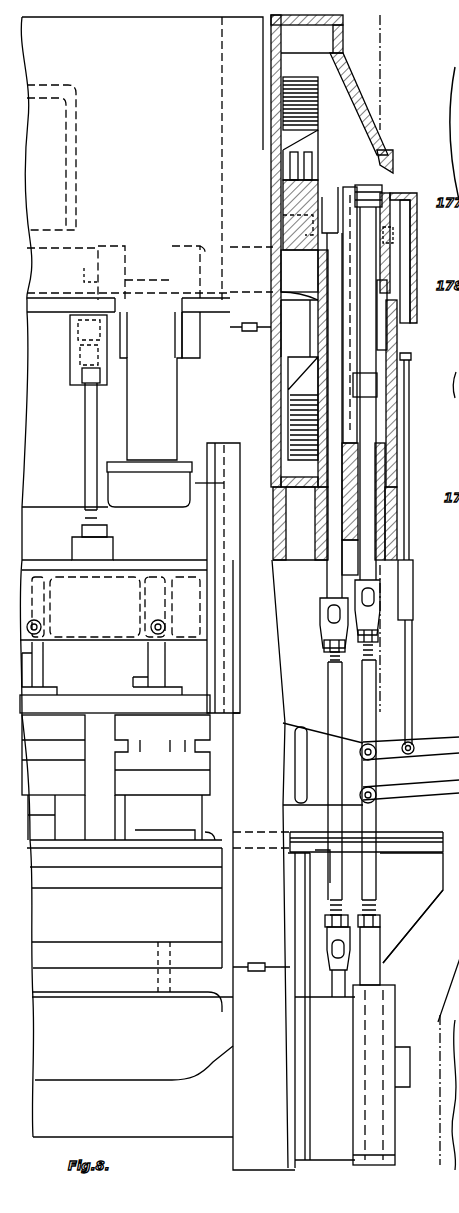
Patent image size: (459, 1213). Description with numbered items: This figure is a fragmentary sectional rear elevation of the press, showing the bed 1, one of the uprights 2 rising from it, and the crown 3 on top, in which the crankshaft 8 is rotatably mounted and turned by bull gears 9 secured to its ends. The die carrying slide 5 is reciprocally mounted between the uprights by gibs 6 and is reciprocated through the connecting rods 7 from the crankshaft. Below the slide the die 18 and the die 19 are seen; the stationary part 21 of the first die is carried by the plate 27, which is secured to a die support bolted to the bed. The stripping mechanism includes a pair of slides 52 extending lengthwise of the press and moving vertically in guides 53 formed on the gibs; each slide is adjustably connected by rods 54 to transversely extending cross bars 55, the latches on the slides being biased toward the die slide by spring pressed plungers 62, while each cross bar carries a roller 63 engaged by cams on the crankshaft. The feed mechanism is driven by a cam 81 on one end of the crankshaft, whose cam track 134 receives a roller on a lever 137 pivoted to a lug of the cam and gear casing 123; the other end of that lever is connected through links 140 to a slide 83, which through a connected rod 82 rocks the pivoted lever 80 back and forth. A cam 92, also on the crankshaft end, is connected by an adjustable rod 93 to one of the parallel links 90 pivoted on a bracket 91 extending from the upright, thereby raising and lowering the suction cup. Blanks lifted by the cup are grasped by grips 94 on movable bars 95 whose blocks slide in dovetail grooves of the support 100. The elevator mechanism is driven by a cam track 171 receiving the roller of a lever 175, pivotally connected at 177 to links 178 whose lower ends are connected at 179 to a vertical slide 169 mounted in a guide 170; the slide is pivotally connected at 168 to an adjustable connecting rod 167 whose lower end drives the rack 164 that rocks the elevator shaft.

The bed 1 is at (58, 1043).
The uprights 2 is at (274, 636).
The crown 3 is at (147, 187).
The die carrying slide 5 is at (38, 507).
The gibs 6 is at (233, 556).
The connecting rods 7 is at (170, 408).
The crankshaft 8 is at (287, 260).
The bull gears 9 is at (317, 90).
The die 18 is at (162, 777).
The die 19 is at (53, 777).
The stationary part 21 is at (364, 32).
The plate 27 is at (66, 865).
The slides 52 is at (113, 608).
The guides 53 is at (213, 600).
The rods 54 is at (90, 418).
The cross bars 55 is at (70, 333).
The spring pressed plungers 62 is at (84, 279).
The roller 63 is at (80, 360).
The pivoted lever 80 is at (340, 985).
The cam 81 is at (312, 200).
The connected rod 82 is at (330, 690).
The slide 83 is at (330, 522).
The parallel links 90 is at (420, 780).
The bracket 91 is at (307, 757).
The cam 92 is at (393, 262).
The adjustable rod 93 is at (413, 645).
The grips 94 is at (213, 830).
The bars 95 is at (90, 840).
The support 100 is at (410, 925).
The cam and gear casing 123 is at (363, 100).
The cam track 134 is at (313, 221).
The lever 137 is at (318, 295).
The links 140 is at (340, 378).
The rack 164 is at (383, 975).
The adjustable connecting rod 167 is at (365, 707).
The pivot connection 168 is at (383, 590).
The vertical slide 169 is at (370, 508).
The guide 170 is at (383, 525).
The cam track 171 is at (340, 187).
The lever 175 is at (365, 183).
The pivot connection 177 is at (373, 193).
The links 178 is at (357, 338).
The pivot connection 179 is at (367, 387).